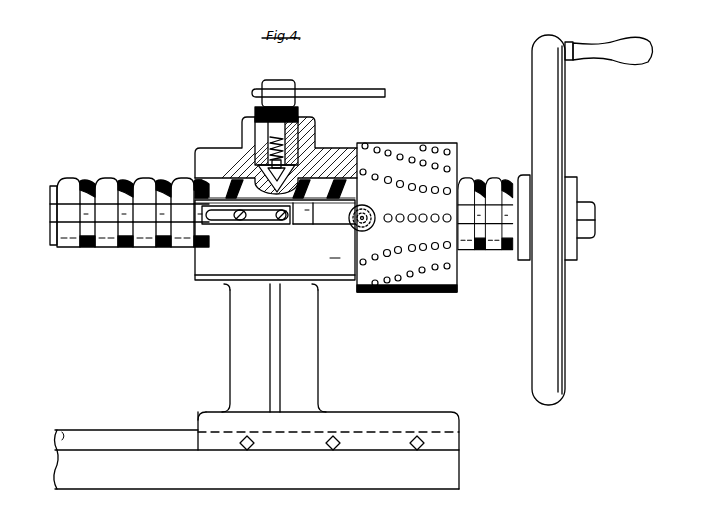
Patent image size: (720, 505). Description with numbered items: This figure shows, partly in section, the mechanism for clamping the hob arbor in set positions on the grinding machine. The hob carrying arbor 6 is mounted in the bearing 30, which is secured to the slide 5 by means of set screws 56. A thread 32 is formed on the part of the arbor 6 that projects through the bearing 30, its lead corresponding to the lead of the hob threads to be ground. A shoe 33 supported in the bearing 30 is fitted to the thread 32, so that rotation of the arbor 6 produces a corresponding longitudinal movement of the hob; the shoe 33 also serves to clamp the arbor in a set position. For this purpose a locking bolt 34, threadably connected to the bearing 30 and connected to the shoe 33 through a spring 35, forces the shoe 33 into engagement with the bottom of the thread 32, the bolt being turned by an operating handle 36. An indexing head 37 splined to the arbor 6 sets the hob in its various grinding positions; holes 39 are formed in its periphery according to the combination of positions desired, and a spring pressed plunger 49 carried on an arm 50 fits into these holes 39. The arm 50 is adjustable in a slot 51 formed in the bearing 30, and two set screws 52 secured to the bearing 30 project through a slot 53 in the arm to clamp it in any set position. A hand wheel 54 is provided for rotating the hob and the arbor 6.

The slide 5 is at (460, 468).
The hob carrying arbor 6 is at (122, 181).
The bearing 30 is at (205, 153).
The thread 32 is at (158, 184).
The shoe 33 is at (258, 170).
The locking bolt 34 is at (280, 86).
The spring 35 is at (300, 110).
The operating handle 36 is at (354, 89).
The indexing head 37 is at (457, 148).
The holes 39 is at (412, 157).
The spring pressed plunger 49 is at (374, 212).
The arm 50 is at (336, 226).
The slot 51 is at (225, 222).
The set screws 52 is at (258, 222).
The slot 53 is at (241, 221).
The hand wheel 54 is at (558, 28).
The set screws 56 is at (328, 447).